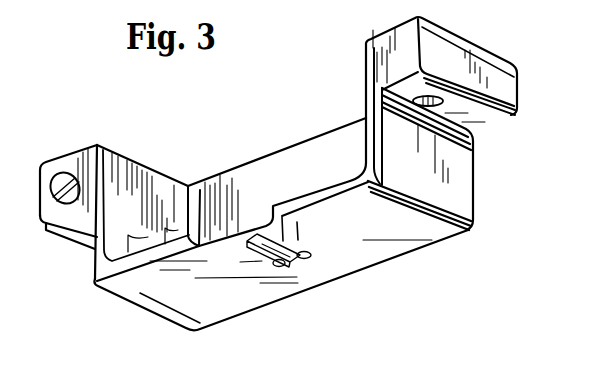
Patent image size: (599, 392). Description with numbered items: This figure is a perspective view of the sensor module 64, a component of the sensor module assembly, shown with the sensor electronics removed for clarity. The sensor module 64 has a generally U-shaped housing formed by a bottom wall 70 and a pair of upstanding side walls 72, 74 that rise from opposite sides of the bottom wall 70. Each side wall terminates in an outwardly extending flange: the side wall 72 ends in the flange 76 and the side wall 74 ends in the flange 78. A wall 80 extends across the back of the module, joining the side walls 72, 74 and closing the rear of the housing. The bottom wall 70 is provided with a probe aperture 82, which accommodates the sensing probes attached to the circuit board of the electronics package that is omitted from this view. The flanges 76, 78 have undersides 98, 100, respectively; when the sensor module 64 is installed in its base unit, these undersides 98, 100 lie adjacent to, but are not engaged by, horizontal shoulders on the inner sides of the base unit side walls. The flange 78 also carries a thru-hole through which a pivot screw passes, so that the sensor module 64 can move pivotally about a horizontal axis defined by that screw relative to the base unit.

The sensor module 64 is at (294, 191).
The bottom wall 70 is at (353, 258).
The side wall 72 is at (93, 274).
The side wall 74 is at (466, 177).
The flange 76 is at (51, 170).
The flange 78 is at (373, 47).
The wall 80 is at (303, 157).
The probe aperture 82 is at (275, 250).
The underside of flange 98 is at (78, 235).
The underside of flange 100 is at (488, 126).